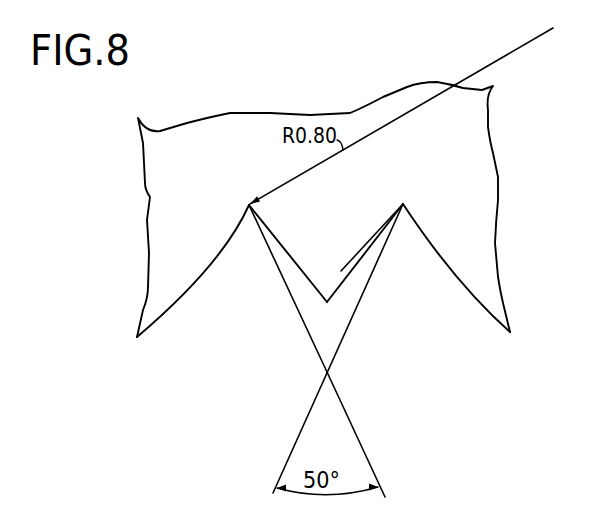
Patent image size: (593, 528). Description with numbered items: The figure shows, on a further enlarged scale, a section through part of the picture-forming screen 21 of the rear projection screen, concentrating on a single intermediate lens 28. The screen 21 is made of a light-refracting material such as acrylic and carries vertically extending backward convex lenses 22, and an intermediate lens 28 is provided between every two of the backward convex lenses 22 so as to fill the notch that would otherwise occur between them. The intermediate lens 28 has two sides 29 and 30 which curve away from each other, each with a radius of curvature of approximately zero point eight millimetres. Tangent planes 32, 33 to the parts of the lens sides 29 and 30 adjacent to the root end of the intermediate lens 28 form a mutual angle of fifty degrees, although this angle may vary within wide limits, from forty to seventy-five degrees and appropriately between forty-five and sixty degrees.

The picture-forming screen 21 is at (238, 118).
The backward convex lenses 22 is at (171, 297).
The intermediate lens 28 is at (345, 266).
The lens side 29 is at (297, 277).
The lens side 30 is at (374, 243).
The tangent plane 32 is at (299, 316).
The tangent plane 33 is at (343, 407).